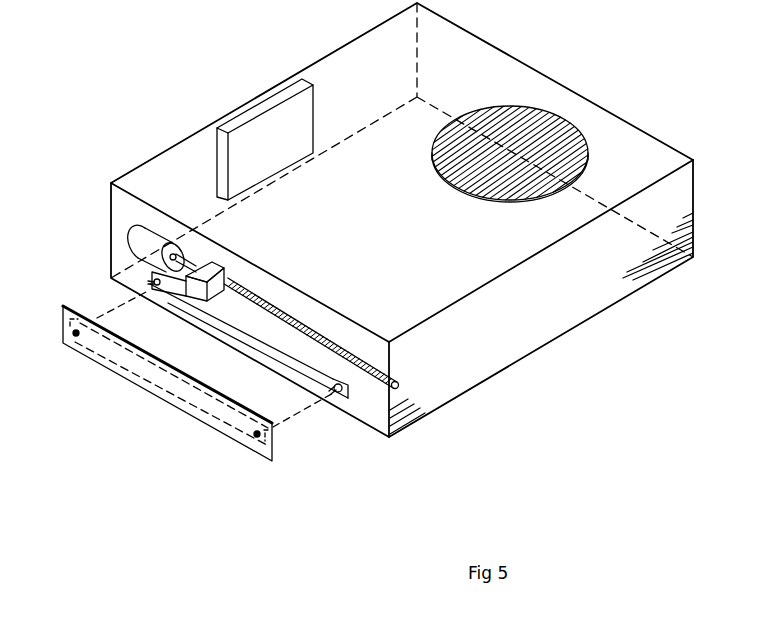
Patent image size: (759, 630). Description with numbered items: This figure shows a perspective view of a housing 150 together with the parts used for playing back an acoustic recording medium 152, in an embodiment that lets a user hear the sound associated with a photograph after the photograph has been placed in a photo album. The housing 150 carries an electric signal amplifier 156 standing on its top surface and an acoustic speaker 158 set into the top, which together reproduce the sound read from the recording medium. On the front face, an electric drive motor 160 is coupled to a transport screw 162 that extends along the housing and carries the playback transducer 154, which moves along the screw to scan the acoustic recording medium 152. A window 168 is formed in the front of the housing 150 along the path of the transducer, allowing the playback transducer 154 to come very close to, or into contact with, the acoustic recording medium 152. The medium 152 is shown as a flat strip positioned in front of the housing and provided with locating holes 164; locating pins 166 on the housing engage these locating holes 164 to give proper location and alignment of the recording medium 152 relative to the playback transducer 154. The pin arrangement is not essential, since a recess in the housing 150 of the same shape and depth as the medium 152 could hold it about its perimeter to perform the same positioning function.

The housing 150 is at (597, 104).
The acoustic recording medium 152 is at (165, 402).
The playback transducer 154 is at (212, 263).
The electric signal amplifier 156 is at (308, 115).
The acoustic speaker 158 is at (465, 117).
The electric drive motor 160 is at (134, 243).
The transport screw 162 is at (399, 384).
The locating hole 164 is at (255, 436).
The locating pin 166 is at (337, 393).
The window 168 is at (275, 362).